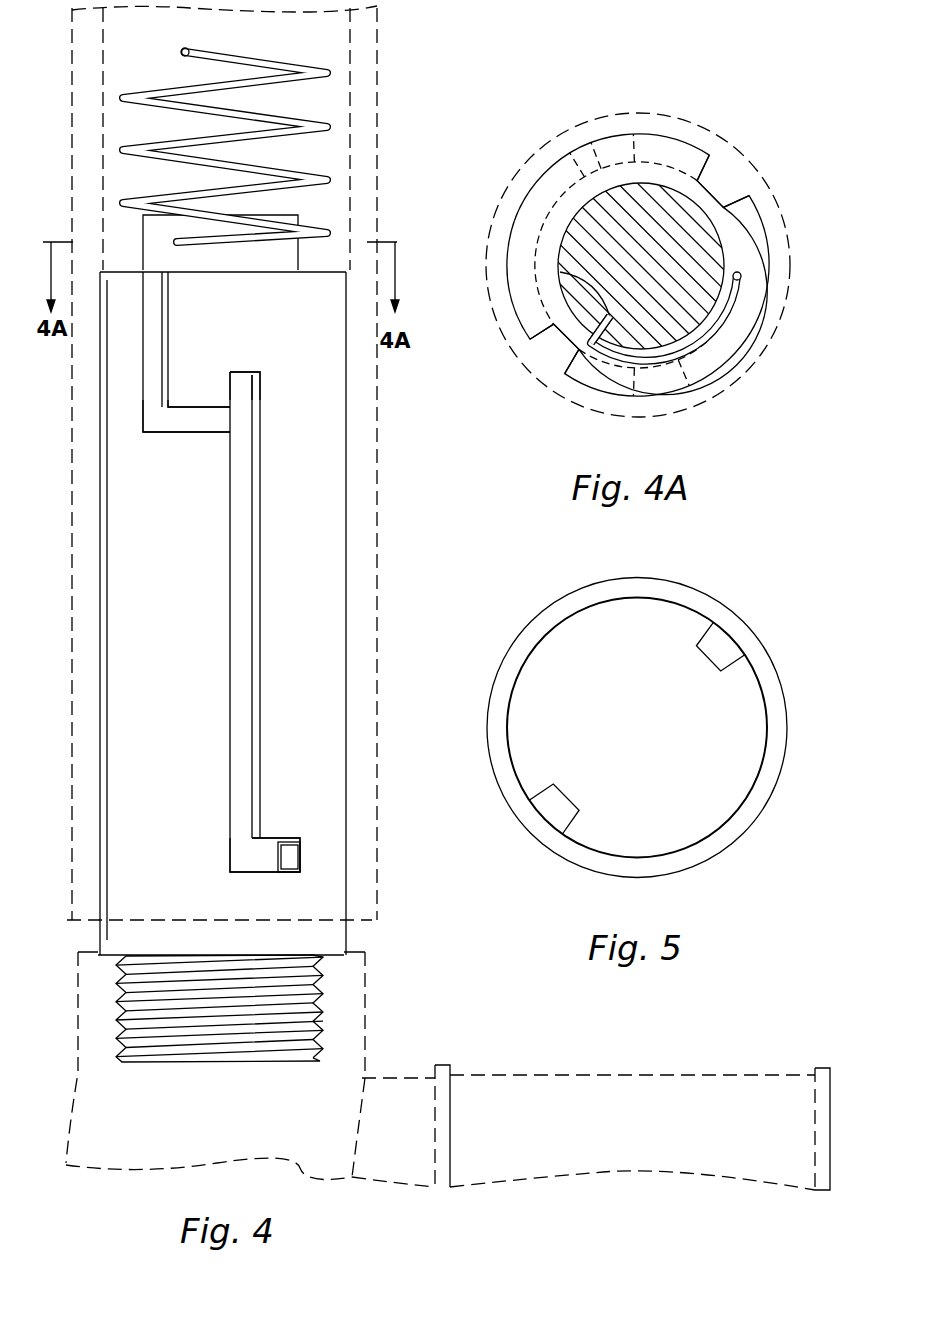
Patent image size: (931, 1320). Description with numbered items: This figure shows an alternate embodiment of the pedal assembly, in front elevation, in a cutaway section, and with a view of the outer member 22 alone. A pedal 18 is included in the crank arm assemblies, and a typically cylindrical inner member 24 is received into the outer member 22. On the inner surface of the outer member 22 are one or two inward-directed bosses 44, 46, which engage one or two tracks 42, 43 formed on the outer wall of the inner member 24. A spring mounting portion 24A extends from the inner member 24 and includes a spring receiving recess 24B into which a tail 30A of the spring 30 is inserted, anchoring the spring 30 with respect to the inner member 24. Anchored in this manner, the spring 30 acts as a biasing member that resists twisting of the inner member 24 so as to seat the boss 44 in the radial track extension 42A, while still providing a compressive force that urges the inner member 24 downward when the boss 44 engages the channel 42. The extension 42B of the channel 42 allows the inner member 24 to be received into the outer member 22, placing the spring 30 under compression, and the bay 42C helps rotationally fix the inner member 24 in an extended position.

In FIG. 4, the pedal 18 is at (613, 1075).
In FIG. 4, the outer member 22 is at (377, 515).
In FIG. 5, the outer member 22 is at (723, 852).
In FIG. 4, the inner member 24 is at (345, 943).
In FIG. 4, the spring mounting portion 24A is at (272, 230).
In FIG. 4A, the spring receiving recess 24B is at (605, 312).
In FIG. 4A, the spring 30 is at (733, 303).
In FIG. 4A, the tail of spring 30A is at (598, 322).
In FIG. 4, the track 42 is at (239, 591).
In FIG. 4A, the track 42 is at (612, 137).
In FIG. 4, the radial track extension 42A is at (302, 863).
In FIG. 4, the extension of channel 42B is at (208, 422).
In FIG. 4, the bay 42C is at (243, 367).
In FIG. 4A, the track 43 is at (677, 390).
In FIG. 4, the boss 44 is at (293, 855).
In FIG. 4A, the boss 44 is at (725, 183).
In FIG. 5, the boss 44 is at (728, 648).
In FIG. 4A, the boss 46 is at (560, 353).
In FIG. 5, the boss 46 is at (548, 810).